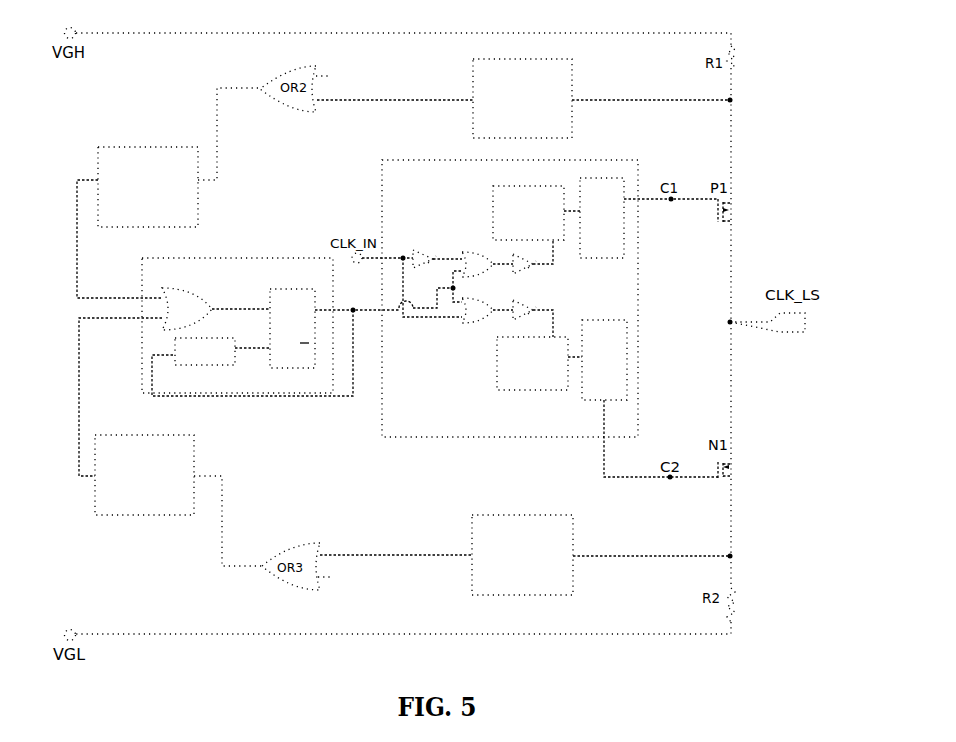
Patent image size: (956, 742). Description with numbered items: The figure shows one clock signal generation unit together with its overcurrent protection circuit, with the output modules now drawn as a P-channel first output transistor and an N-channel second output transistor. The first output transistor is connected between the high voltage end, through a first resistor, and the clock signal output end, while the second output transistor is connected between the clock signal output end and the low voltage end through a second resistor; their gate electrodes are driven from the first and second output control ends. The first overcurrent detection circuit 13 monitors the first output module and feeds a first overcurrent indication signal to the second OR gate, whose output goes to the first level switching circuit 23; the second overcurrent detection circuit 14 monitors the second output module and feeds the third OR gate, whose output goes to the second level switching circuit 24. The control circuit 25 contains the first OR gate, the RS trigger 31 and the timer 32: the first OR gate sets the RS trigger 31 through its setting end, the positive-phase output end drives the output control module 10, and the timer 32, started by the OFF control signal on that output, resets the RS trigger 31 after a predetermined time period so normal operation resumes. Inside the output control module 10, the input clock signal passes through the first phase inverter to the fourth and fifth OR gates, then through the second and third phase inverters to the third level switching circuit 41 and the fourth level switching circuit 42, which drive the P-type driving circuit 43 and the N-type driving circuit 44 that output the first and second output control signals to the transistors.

The output control module 10 is at (410, 158).
The first overcurrent detection circuit 13 is at (573, 72).
The second overcurrent detection circuit 14 is at (525, 514).
The first level switching circuit 23 is at (135, 147).
The second level switching circuit 24 is at (128, 435).
The control circuit 25 is at (232, 259).
The RS trigger 31 is at (287, 289).
The timer 32 is at (212, 365).
The third level switching circuit 41 is at (493, 195).
The fourth level switching circuit 42 is at (495, 373).
The P-type driving circuit 43 is at (590, 258).
The N-type driving circuit 44 is at (580, 393).